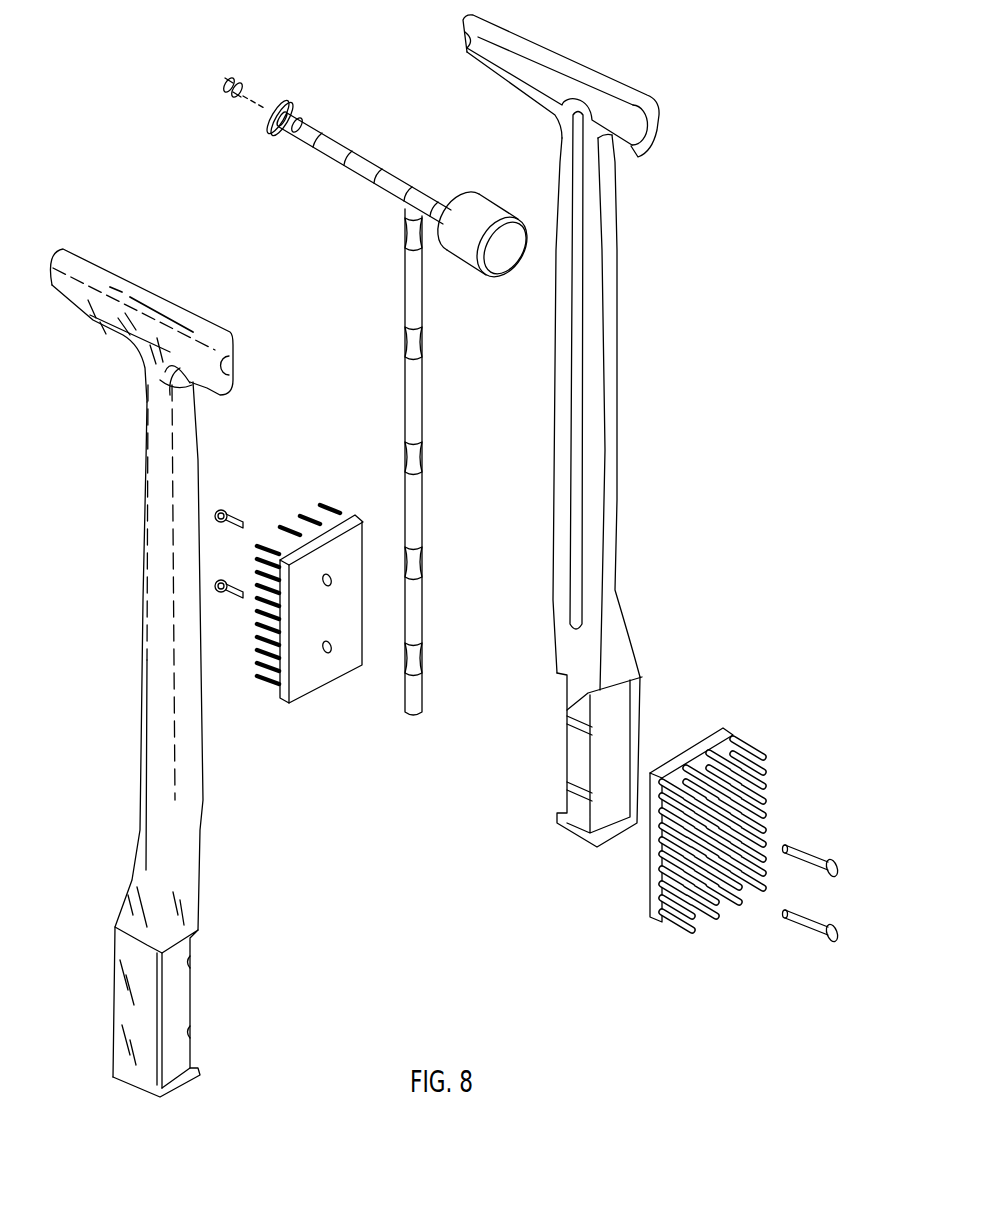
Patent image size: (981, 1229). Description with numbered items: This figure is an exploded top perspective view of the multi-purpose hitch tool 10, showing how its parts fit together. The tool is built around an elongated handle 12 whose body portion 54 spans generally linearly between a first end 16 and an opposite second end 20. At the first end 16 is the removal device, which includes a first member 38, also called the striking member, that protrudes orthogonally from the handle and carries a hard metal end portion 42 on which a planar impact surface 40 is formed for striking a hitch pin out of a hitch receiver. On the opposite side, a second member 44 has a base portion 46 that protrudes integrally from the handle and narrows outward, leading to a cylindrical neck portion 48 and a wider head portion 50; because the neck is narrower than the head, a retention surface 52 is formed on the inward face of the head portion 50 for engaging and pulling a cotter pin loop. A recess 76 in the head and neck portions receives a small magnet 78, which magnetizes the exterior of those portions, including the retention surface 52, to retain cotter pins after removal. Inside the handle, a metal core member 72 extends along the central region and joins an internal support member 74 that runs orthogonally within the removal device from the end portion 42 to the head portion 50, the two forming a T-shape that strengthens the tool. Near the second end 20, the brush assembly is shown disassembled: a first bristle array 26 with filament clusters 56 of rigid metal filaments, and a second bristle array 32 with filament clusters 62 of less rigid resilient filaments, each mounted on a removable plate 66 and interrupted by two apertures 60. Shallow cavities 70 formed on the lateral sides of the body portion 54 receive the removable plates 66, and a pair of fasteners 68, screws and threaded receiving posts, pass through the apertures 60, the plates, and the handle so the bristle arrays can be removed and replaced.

The multi-purpose hitch tool 10 is at (138, 80).
The elongated handle 12 is at (130, 753).
The first end 16 is at (130, 387).
The second end 20 is at (93, 967).
The first bristle array 26 is at (714, 930).
The second bristle array 32 is at (265, 692).
The first member 38 is at (625, 172).
The planar impact surface 40 is at (507, 254).
The end portion 42 is at (493, 197).
The second member 44 is at (80, 327).
The base portion 46 is at (90, 275).
The neck portion 48 is at (290, 108).
The head portion 50 is at (270, 118).
The retention surface 52 is at (280, 140).
The body portion 54 is at (157, 682).
The filament clusters 56 is at (752, 840).
The apertures 60 is at (333, 650).
The filament clusters 62 is at (330, 515).
The removable plate 66 is at (310, 672).
The fasteners 68 is at (238, 582).
The shallow cavities 70 is at (172, 1005).
The metal core member 72 is at (415, 505).
The internal support member 74 is at (362, 150).
The recess 76 is at (299, 130).
The magnet 78 is at (244, 74).